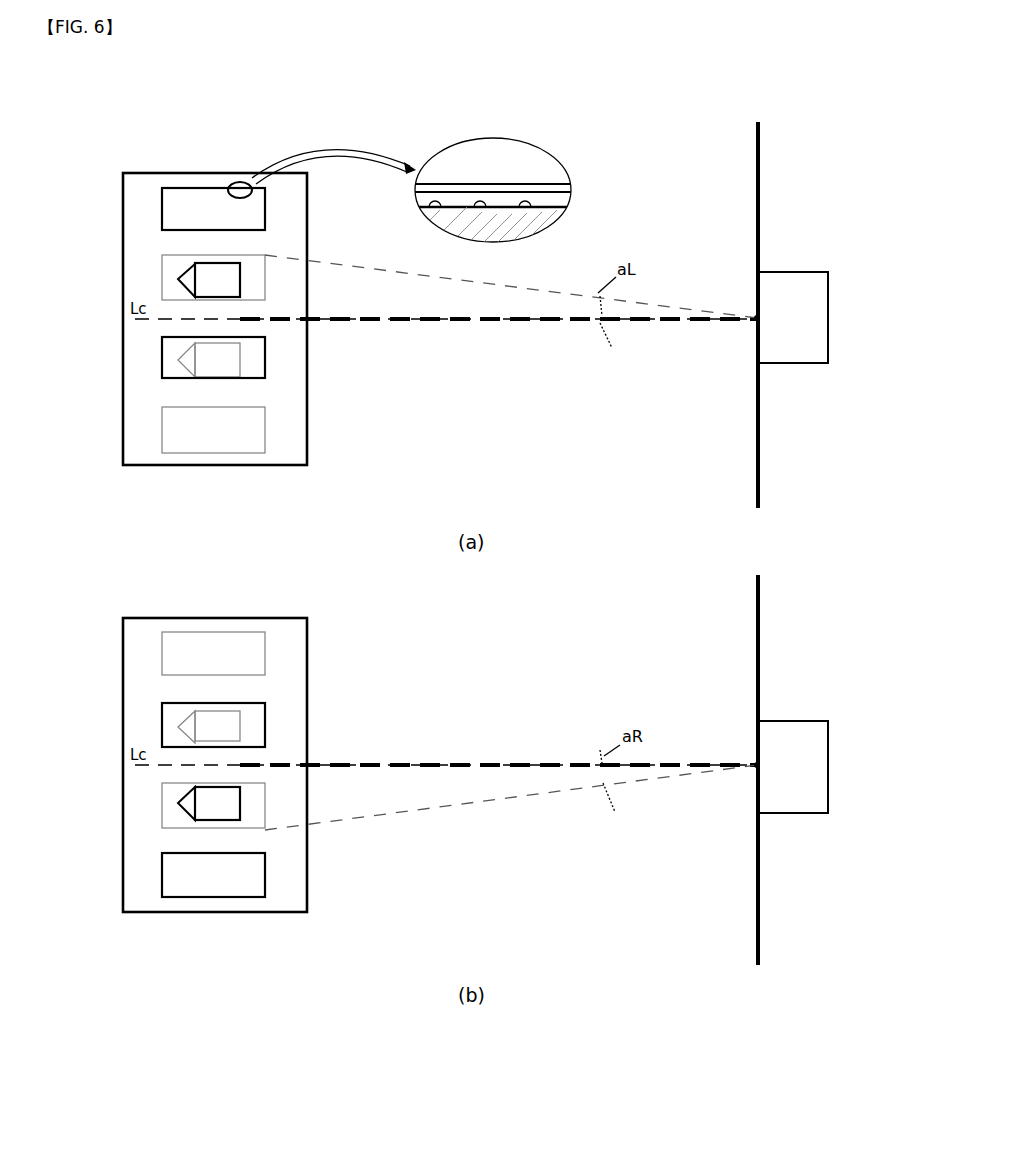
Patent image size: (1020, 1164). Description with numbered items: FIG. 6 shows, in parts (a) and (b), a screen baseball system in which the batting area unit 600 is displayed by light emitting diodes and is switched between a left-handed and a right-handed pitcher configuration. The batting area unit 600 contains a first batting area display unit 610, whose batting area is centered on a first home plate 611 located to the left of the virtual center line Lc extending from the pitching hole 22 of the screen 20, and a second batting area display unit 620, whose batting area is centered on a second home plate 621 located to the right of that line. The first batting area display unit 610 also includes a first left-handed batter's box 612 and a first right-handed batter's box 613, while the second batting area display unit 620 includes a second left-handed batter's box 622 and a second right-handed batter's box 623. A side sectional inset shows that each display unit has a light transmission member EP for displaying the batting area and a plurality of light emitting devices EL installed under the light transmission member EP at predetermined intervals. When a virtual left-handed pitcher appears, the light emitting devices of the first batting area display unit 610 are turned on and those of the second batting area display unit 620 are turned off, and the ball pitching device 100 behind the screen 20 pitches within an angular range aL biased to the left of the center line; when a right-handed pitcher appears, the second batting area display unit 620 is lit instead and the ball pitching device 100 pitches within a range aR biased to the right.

The batting area unit 600 is at (308, 364).
The first batting area display unit 610 is at (284, 205).
The second batting area display unit 620 is at (284, 408).
The first home plate 611 is at (177, 278).
The first left-handed batter's box 612 is at (162, 206).
The first right-handed batter's box 613 is at (162, 358).
The second home plate 621 is at (180, 355).
The second left-handed batter's box 622 is at (162, 261).
The second right-handed batter's box 623 is at (163, 428).
The screen 20 is at (760, 202).
The pitching hole 22 is at (748, 310).
The ball pitching device 100 is at (829, 315).
The light transmission member EP is at (538, 184).
The light emitting devices EL is at (533, 204).